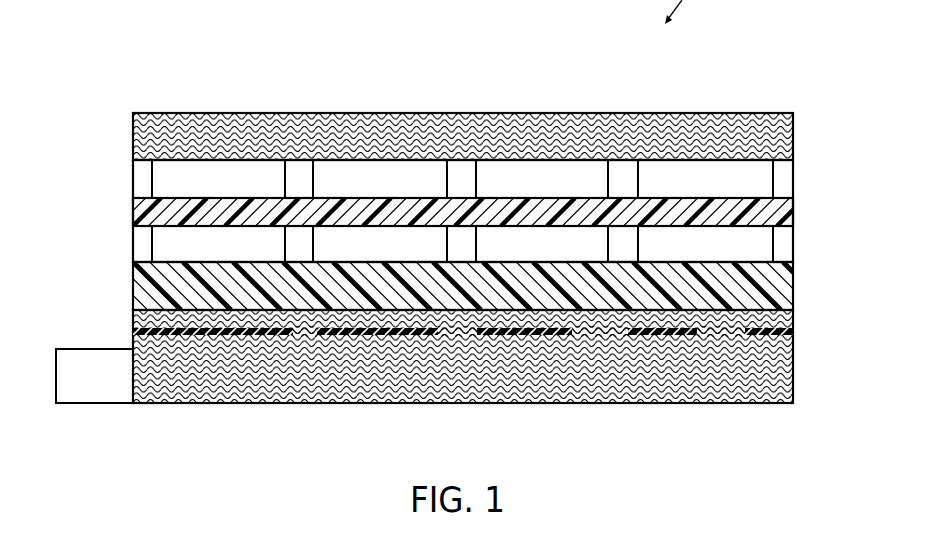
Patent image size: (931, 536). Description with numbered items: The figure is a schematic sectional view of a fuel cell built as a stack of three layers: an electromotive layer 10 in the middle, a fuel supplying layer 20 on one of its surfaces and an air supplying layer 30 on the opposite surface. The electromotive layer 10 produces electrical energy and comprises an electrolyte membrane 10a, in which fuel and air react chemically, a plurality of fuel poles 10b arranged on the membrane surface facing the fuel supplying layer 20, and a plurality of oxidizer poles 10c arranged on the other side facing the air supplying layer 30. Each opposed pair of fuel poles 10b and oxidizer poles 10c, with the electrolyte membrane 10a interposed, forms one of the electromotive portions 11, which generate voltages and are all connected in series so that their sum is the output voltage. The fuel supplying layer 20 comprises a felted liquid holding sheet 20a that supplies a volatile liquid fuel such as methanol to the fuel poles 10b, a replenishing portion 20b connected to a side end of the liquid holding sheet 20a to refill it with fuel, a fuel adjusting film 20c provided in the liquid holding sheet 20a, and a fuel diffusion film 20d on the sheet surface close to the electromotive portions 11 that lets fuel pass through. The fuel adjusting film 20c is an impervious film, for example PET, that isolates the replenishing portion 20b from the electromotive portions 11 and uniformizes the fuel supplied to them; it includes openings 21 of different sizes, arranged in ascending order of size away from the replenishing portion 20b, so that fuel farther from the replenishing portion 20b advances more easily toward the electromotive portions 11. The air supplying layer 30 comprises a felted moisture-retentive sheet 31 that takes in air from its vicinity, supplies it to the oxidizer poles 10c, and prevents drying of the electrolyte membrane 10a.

The air supplying layer 30 is at (801, 113).
The felted moisture-retentive sheet 31 is at (189, 113).
The electromotive layer 10 is at (453, 144).
The electrolyte membrane 10a is at (133, 213).
The fuel poles 10b is at (275, 236).
The oxidizer poles 10c is at (225, 166).
The electromotive portions 11 is at (297, 177).
The fuel supplying layer 20 is at (454, 363).
The fuel diffusion film 20d is at (133, 288).
The felted liquid holding sheet 20a is at (224, 395).
The replenishing portion 20b is at (102, 392).
The fuel adjusting film 20c is at (376, 336).
The openings 21 is at (306, 336).